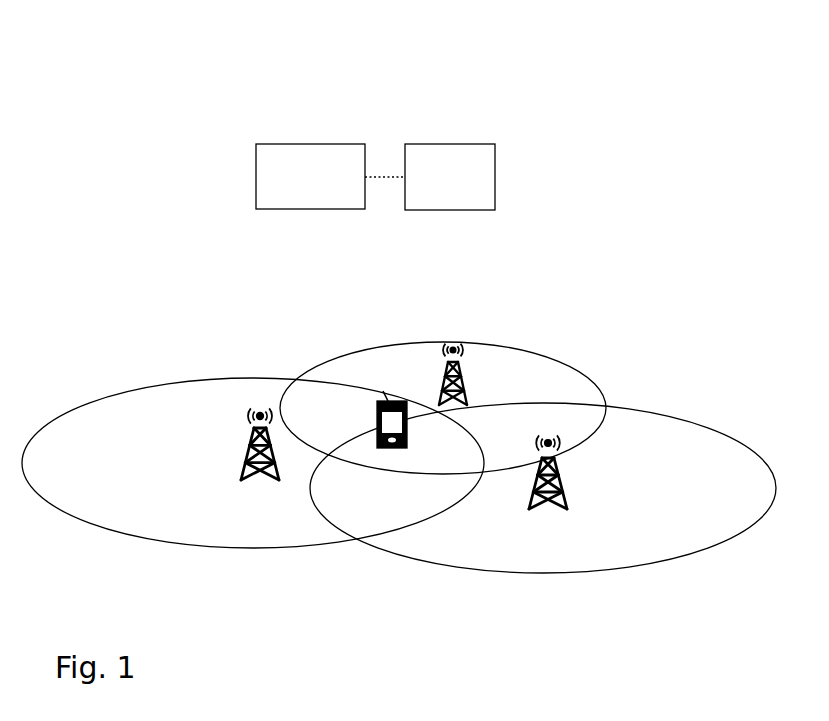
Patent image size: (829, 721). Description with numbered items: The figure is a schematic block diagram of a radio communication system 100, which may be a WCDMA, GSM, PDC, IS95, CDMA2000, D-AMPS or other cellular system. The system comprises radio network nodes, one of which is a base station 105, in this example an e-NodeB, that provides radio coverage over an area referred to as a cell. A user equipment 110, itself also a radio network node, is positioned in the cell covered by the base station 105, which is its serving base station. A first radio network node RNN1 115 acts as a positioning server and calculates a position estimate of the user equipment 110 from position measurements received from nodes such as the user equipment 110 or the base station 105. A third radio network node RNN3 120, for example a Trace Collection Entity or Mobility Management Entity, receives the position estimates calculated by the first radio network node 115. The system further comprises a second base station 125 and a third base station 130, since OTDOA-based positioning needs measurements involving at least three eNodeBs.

The radio communication system 100 is at (178, 67).
The base station 105 is at (435, 367).
The user equipment 110 is at (360, 408).
The first radio network node RNN1 115 is at (323, 153).
The third radio network node RNN3 120 is at (423, 155).
The second base station 125 is at (258, 493).
The third base station 130 is at (578, 515).